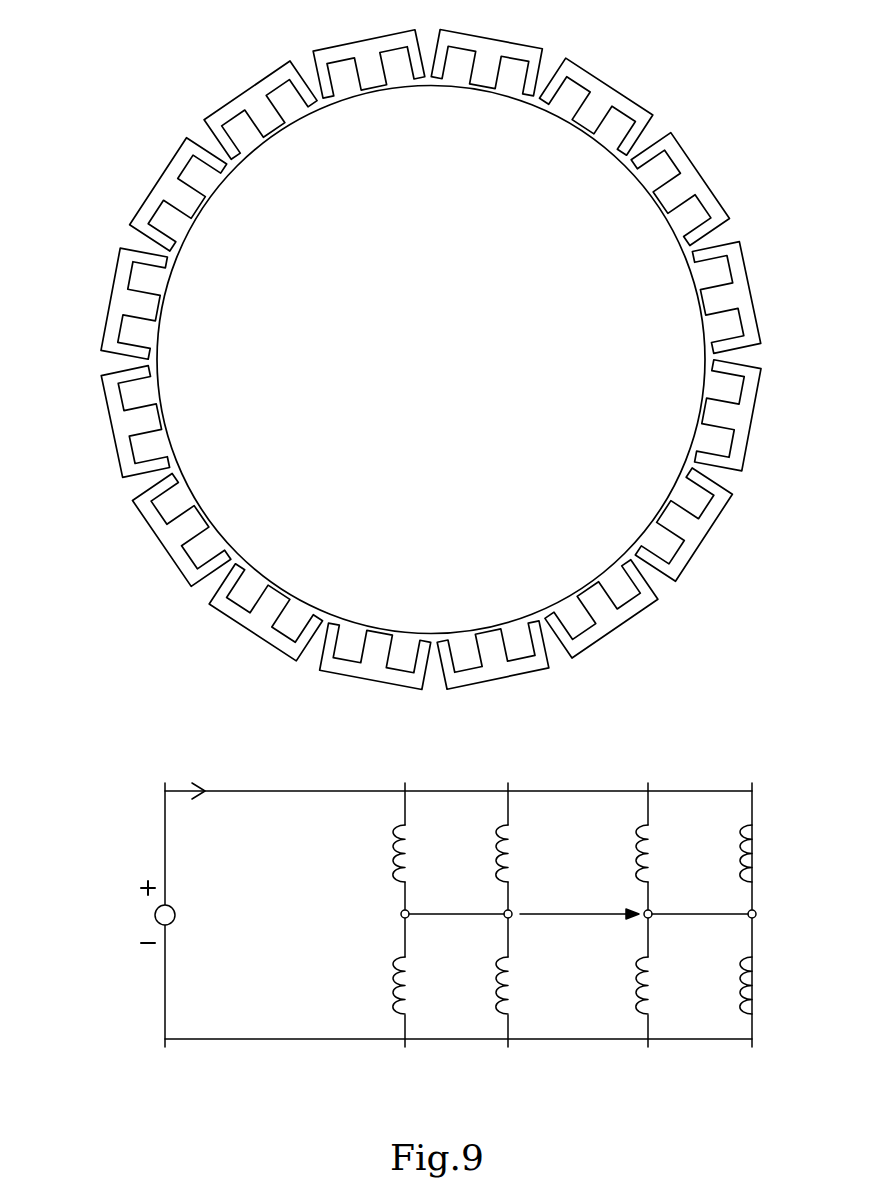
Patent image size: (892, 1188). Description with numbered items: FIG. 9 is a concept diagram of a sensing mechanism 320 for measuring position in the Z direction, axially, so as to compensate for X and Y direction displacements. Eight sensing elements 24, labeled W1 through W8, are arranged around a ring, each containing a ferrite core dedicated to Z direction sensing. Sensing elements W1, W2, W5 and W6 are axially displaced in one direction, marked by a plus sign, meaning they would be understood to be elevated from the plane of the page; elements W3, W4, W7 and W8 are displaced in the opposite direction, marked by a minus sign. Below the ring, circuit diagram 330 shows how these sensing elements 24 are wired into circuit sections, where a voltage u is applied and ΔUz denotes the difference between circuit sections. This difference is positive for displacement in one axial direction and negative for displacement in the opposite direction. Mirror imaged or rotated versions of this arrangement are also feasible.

The coil segment (winding) 24 is at (131, 229).
The annular stator winding arrangement 320 is at (421, 365).
The circuit diagram 330 is at (121, 850).